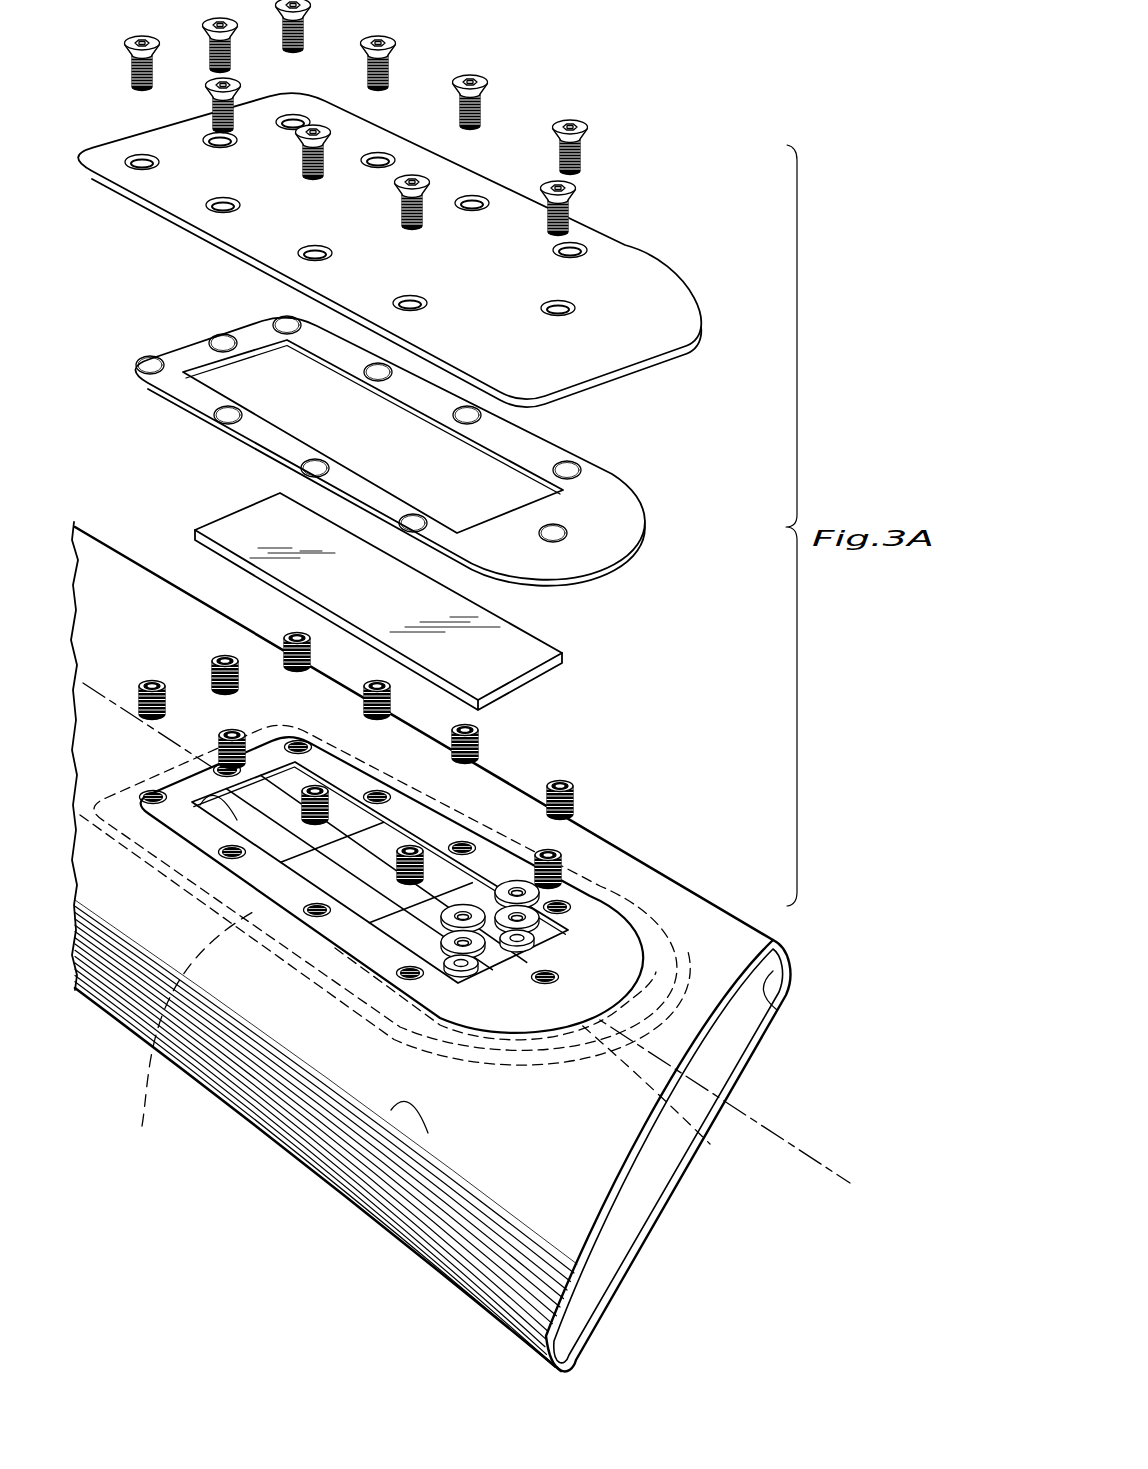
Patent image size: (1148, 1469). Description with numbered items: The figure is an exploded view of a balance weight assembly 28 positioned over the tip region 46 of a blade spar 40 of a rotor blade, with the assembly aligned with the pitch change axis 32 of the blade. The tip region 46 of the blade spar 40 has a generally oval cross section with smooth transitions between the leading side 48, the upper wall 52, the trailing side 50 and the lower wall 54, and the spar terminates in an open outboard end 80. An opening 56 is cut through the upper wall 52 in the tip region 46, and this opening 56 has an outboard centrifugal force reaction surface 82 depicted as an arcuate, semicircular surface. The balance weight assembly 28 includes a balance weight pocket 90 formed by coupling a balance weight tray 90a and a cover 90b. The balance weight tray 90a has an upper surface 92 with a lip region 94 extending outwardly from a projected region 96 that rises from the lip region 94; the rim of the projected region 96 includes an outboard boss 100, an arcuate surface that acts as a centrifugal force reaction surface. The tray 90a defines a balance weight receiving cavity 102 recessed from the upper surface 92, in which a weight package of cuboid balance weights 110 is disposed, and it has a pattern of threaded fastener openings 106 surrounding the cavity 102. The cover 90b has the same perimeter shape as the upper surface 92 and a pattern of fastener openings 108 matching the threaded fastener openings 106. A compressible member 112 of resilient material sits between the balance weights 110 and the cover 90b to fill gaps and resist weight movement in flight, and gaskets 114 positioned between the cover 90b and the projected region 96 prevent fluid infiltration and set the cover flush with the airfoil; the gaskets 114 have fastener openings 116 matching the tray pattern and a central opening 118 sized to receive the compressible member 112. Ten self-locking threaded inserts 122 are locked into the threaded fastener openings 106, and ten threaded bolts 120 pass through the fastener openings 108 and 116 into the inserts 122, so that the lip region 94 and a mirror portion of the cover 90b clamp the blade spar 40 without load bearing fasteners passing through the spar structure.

The balance weight assembly 28 is at (657, 176).
The pitch change axis 32 is at (808, 1157).
The blade spar 40 is at (602, 857).
The tip region 46 is at (645, 878).
The leading side 48 is at (780, 1008).
The trailing side 50 is at (465, 1280).
The upper wall 52 is at (391, 1110).
The lower wall 54 is at (600, 1297).
The opening 56 is at (327, 927).
The open outboard end 80 is at (670, 1213).
The outboard centrifugal force reaction surface 82 is at (714, 1146).
The balance weight pocket 90 is at (643, 242).
The balance weight tray 90a is at (610, 990).
The cover 90b is at (677, 293).
The upper surface 92 is at (553, 1027).
The lip region 94 is at (192, 1031).
The projected region 96 is at (345, 940).
The outboard boss 100 is at (630, 1008).
The balance weight receiving cavity 102 is at (427, 860).
The threaded fastener openings 106 is at (548, 975).
The fastener openings 108 is at (472, 197).
The balance weights 110 is at (202, 806).
The compressible member 112 is at (535, 648).
The gaskets 114 is at (608, 503).
The fastener openings 116 is at (568, 468).
The central opening 118 is at (510, 450).
The threaded bolts 120 is at (583, 150).
The self-locking threaded inserts 122 is at (580, 797).